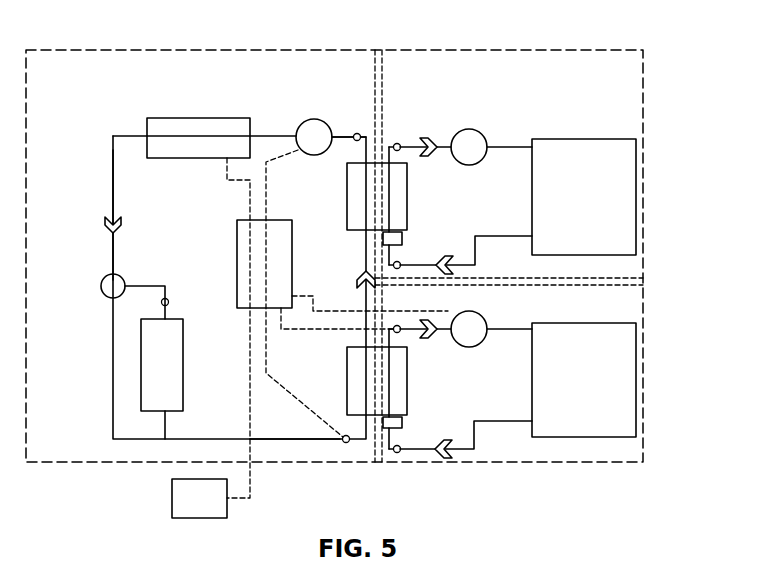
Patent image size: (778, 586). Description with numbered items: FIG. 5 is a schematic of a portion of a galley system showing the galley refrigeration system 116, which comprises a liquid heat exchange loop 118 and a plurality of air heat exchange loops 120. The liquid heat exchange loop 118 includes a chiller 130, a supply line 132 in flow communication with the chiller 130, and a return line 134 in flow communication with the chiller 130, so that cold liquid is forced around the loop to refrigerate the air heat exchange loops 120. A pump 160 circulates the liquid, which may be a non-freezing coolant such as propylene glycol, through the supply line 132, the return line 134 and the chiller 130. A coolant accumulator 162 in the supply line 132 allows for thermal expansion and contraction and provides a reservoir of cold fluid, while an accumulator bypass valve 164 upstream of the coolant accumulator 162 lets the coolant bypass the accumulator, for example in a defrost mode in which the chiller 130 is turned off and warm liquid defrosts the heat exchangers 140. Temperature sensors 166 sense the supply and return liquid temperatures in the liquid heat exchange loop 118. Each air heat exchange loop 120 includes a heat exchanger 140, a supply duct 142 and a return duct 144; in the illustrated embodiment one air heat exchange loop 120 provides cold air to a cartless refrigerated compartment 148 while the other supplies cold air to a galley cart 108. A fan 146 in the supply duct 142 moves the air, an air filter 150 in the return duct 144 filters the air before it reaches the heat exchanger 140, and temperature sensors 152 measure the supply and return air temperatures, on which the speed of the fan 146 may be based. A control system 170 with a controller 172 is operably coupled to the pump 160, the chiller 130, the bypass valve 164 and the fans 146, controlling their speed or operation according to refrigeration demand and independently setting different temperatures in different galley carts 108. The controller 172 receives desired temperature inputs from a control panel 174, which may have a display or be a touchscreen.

The galley cart 108 is at (615, 197).
The galley refrigeration system 116 is at (598, 32).
The liquid heat exchange loop 118 is at (118, 126).
The air heat exchange loop 120 is at (562, 114).
The chiller 130 is at (205, 118).
The supply line 132 is at (112, 200).
The return line 134 is at (340, 133).
The heat exchanger 140 is at (407, 196).
The supply duct 142 is at (414, 146).
The return duct 144 is at (475, 251).
The fan 146 is at (479, 121).
The refrigerated compartment 148 is at (615, 383).
The air filter 150 is at (402, 240).
The temperature sensor 152 is at (397, 143).
The pump 160 is at (312, 119).
The coolant accumulator 162 is at (183, 347).
The accumulator bypass valve 164 is at (101, 287).
The temperature sensor 166 is at (357, 133).
The control system 170 is at (233, 211).
The controller 172 is at (237, 246).
The control panel 174 is at (172, 500).